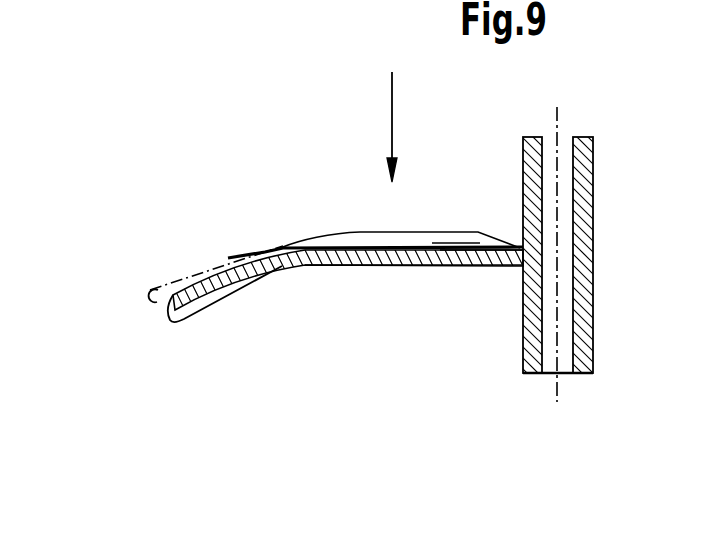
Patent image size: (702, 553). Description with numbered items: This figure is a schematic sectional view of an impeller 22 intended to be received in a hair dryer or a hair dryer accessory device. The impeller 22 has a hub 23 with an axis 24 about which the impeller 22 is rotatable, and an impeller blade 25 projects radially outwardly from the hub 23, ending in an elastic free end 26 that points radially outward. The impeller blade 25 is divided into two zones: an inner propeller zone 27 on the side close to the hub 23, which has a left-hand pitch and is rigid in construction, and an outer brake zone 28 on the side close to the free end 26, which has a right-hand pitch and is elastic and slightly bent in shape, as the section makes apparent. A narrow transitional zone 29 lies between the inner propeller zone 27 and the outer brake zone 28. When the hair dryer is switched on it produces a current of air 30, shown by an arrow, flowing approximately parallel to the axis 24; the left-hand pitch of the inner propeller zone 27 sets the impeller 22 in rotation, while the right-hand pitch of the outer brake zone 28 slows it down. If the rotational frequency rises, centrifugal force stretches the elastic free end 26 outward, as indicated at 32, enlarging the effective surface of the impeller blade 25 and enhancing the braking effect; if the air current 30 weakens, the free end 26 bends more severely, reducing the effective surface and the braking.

The impeller 22 is at (230, 230).
The hub 23 is at (530, 184).
The axis 24 is at (555, 390).
The impeller blade 25 is at (352, 262).
The elastic free end 26 is at (134, 279).
The inner propeller zone 27 is at (483, 266).
The outer brake zone 28 is at (183, 277).
The transitional zone 29 is at (270, 252).
The current of air 30 is at (393, 125).
The stretched free end position 32 is at (153, 303).